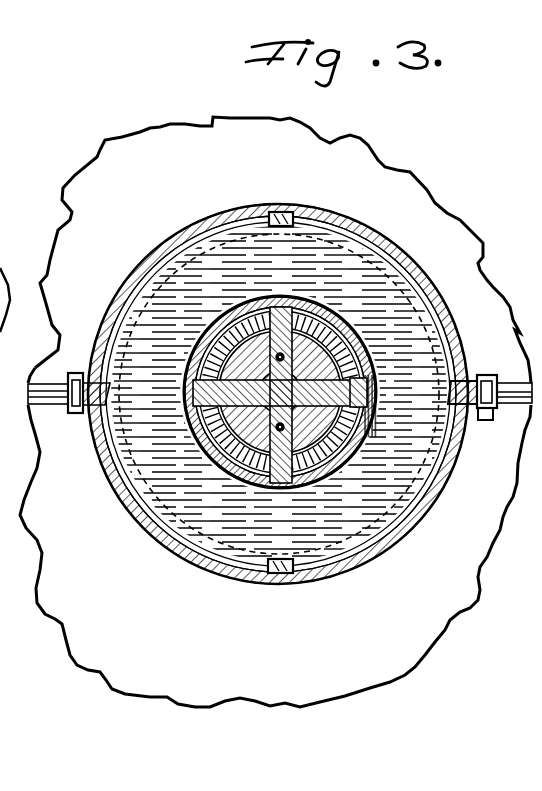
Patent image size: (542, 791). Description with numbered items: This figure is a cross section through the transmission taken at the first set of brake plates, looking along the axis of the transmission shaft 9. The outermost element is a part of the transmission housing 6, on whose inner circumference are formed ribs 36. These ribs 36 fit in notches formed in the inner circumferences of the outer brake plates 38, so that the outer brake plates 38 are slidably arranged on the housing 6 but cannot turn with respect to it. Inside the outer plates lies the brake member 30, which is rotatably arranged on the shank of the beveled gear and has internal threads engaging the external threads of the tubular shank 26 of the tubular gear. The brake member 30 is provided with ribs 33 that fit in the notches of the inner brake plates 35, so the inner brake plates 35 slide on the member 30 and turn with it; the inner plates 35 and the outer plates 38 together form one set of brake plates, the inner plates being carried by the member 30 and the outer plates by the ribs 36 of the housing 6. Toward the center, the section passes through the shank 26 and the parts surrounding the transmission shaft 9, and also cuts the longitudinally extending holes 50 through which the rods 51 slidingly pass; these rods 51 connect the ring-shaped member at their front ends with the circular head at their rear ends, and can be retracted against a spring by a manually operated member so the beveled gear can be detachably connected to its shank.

The transmission housing 6 is at (392, 235).
The outer brake plates 38 is at (318, 255).
The ribs 36 is at (272, 232).
The ribs 33 is at (287, 298).
The inner brake plates 35 is at (350, 340).
The tubular shank 26 is at (307, 443).
The longitudinally extending holes 50 is at (377, 431).
The transmission shaft 9 is at (362, 362).
The rods 51 is at (295, 335).
The brake member 30 is at (368, 393).